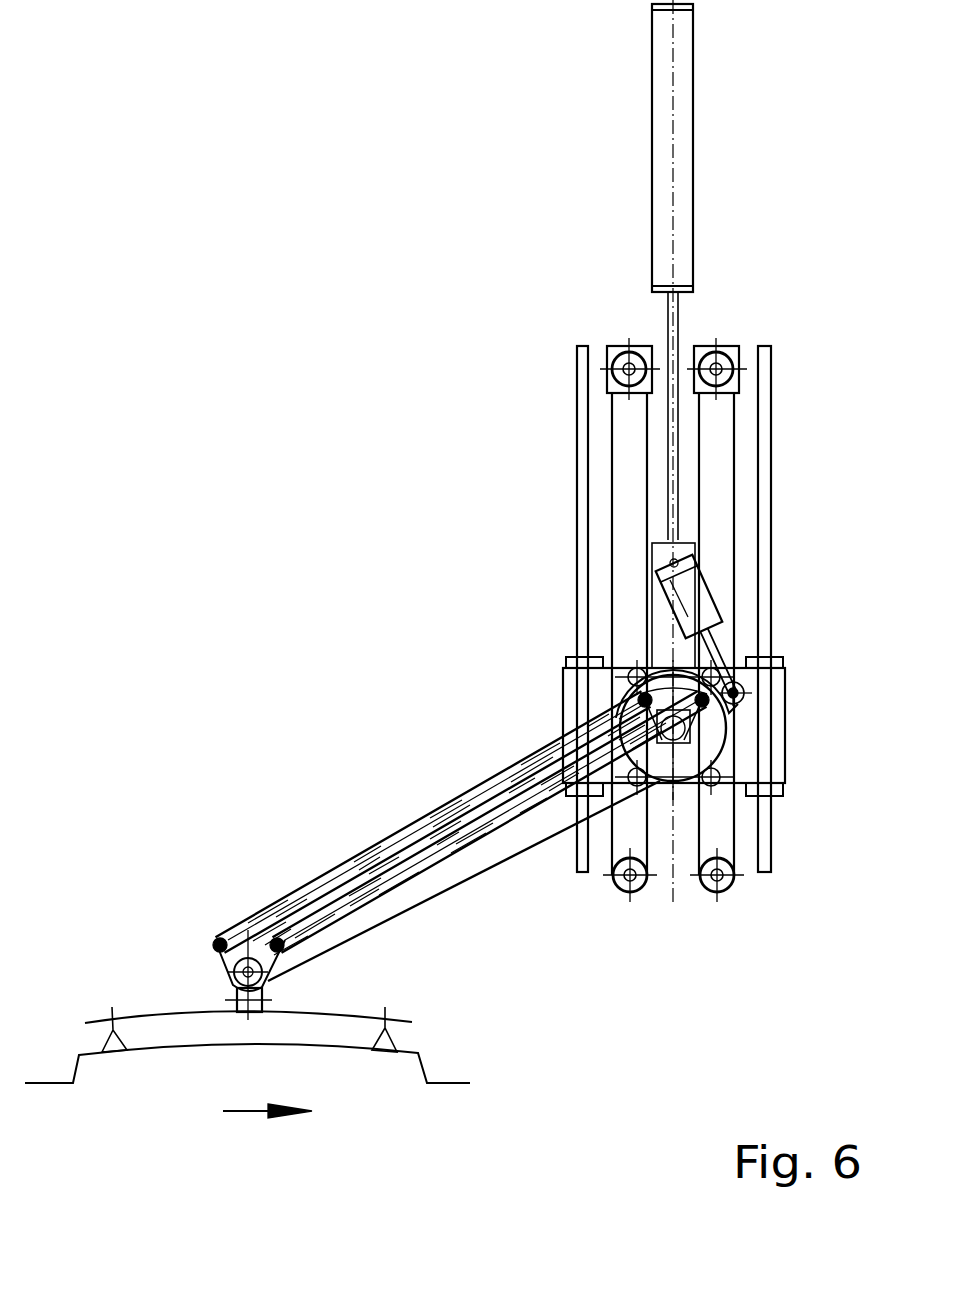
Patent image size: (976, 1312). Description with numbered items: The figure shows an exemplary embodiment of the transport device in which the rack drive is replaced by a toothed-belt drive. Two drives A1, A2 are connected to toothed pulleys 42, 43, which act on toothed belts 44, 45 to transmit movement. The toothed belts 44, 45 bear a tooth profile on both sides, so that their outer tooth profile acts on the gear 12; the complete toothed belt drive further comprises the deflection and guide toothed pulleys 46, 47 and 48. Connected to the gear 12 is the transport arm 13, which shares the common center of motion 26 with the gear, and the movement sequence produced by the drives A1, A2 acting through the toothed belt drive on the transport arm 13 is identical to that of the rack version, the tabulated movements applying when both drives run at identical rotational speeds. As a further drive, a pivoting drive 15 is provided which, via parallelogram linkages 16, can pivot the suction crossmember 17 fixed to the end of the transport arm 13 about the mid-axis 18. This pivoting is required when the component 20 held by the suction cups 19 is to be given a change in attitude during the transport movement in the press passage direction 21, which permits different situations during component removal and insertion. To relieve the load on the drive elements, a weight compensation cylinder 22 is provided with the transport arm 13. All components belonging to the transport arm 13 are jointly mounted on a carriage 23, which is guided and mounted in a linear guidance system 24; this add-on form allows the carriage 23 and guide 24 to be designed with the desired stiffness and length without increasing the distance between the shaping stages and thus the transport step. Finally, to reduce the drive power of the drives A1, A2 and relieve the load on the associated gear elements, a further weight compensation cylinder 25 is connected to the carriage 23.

The gear 12 is at (720, 757).
The transport arm 13 is at (462, 870).
The pivoting drive 15 is at (745, 787).
The parallelogram linkages 16 is at (252, 940).
The suction crossmember 17 is at (240, 993).
The mid-axis 18 is at (235, 968).
The suction cups 19 is at (392, 1040).
The component 20 is at (450, 1078).
The press passage direction 21 is at (247, 1110).
The weight compensation cylinder 22 is at (687, 609).
The carriage 23 is at (572, 702).
The linear guidance system 24 is at (573, 663).
The weight compensation cylinder 25 is at (660, 92).
The common center of motion 26 is at (720, 722).
The toothed pulley 42 is at (622, 378).
The toothed pulley 43 is at (730, 382).
The toothed belt 44 is at (612, 477).
The toothed belt 45 is at (734, 492).
The deflection and guide toothed pulley 46 is at (617, 688).
The deflection and guide toothed pulley 47 is at (636, 787).
The deflection and guide toothed pulley 48 is at (636, 893).
The drive A1 is at (612, 350).
The drive A2 is at (727, 353).